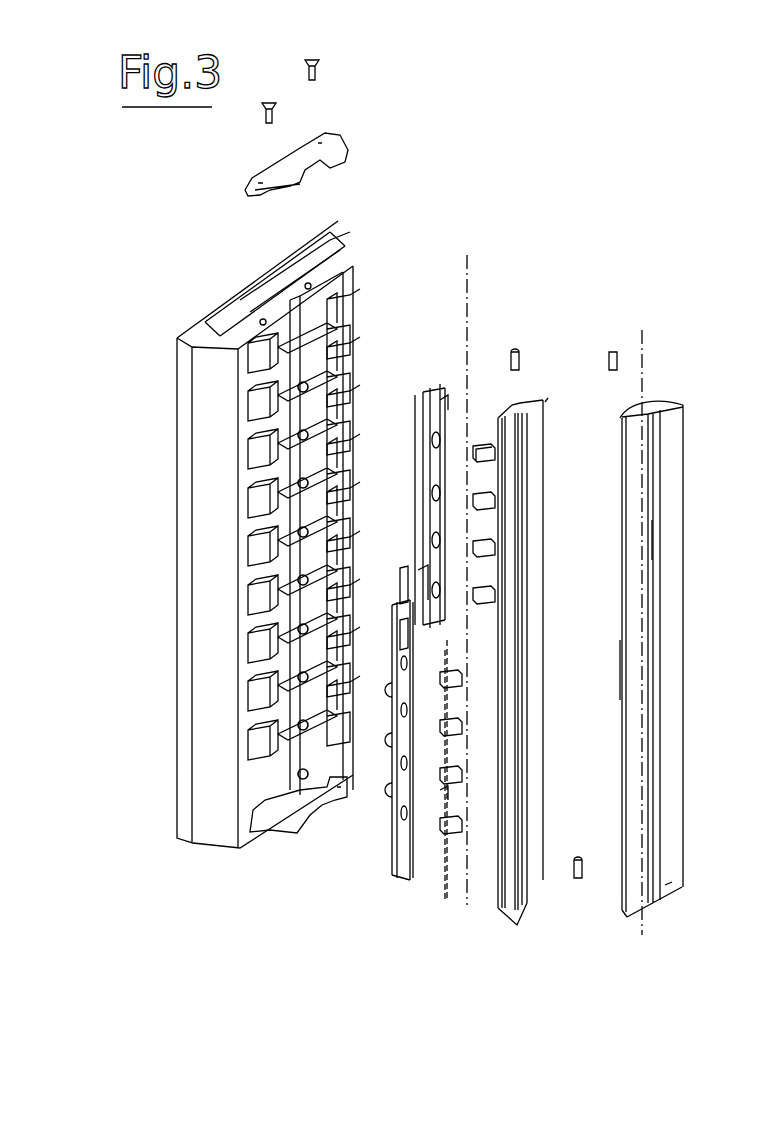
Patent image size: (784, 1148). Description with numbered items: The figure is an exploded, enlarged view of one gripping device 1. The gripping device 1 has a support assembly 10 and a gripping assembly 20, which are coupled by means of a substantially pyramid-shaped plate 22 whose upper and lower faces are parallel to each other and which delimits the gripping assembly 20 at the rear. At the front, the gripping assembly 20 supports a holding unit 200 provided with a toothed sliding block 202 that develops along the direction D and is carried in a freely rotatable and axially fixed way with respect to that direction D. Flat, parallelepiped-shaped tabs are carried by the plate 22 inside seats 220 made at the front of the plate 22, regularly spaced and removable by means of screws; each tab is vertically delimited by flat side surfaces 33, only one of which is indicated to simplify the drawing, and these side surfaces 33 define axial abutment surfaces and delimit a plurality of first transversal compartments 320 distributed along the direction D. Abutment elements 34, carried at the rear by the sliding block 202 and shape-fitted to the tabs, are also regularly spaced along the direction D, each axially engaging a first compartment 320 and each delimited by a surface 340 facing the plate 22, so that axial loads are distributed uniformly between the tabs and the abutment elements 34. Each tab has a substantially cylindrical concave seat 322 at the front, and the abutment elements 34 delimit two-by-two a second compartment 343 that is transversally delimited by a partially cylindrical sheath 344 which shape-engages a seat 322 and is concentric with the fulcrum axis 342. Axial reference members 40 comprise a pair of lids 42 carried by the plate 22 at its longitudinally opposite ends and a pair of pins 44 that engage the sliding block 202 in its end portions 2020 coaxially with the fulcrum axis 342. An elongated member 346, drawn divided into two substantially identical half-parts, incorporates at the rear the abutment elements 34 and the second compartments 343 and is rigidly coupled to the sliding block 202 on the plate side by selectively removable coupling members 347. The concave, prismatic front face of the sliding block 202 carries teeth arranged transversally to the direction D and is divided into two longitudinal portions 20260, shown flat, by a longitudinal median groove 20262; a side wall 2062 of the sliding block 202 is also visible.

The gripping device 1 is at (690, 170).
The support assembly 10 is at (230, 534).
The gripping assembly 20 is at (638, 589).
The plate 22 is at (200, 786).
The side surface 33 is at (340, 343).
The abutment element 34 is at (280, 410).
The axial reference members 40 is at (340, 110).
The lid 42 is at (332, 134).
The pin 44 is at (516, 348).
The holding unit 200 is at (598, 255).
The sliding block 202 is at (545, 432).
The seat 220 is at (258, 357).
The first transversal compartment 320 is at (270, 752).
The concave seat 322 is at (372, 362).
The surface 340 is at (458, 418).
The fulcrum axis 342 is at (645, 360).
The second compartment 343 is at (415, 505).
The partially cylindrical sheath 344 is at (415, 570).
The elongated member 346 is at (400, 620).
The coupling member 347 is at (450, 834).
The end portion 2020 is at (545, 410).
The rail side wall 2062 is at (672, 513).
The longitudinal portion 20260 is at (640, 652).
The longitudinal median groove 20262 is at (655, 570).
The direction D is at (468, 274).